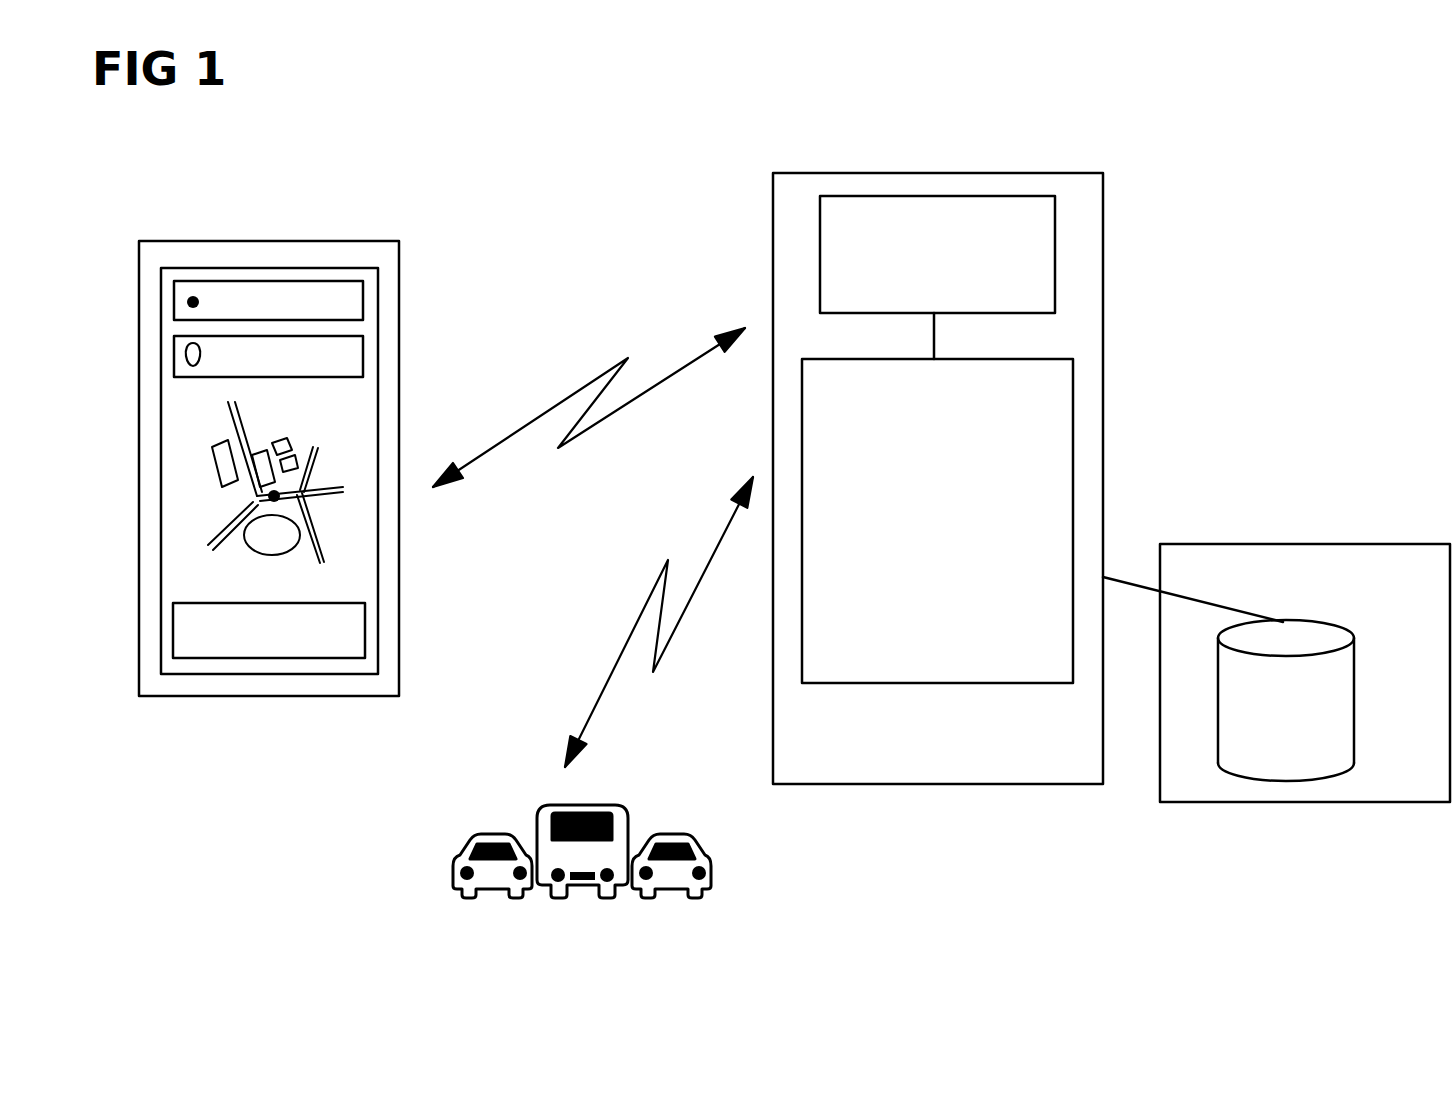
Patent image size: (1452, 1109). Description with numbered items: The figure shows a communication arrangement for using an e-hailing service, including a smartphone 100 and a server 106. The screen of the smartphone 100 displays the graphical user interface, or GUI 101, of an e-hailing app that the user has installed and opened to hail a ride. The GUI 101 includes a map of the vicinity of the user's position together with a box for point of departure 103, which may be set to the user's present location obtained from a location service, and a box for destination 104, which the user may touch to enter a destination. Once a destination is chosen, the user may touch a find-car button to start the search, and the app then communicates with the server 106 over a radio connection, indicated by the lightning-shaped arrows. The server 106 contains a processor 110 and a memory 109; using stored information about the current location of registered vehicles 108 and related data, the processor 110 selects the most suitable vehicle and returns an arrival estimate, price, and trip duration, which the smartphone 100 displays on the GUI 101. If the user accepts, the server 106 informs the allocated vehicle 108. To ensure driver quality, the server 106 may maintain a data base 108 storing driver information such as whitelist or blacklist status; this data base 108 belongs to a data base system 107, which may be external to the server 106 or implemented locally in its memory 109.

The smartphone 100 is at (383, 240).
The graphical user interface 101 is at (167, 327).
The box for point of departure 103 is at (363, 301).
The box for destination 104 is at (363, 350).
The server 106 is at (1103, 173).
The data base system 107 is at (1283, 544).
The data base / registered vehicles 108 is at (1342, 627).
The memory 109 is at (1073, 517).
The processor 110 is at (1055, 250).